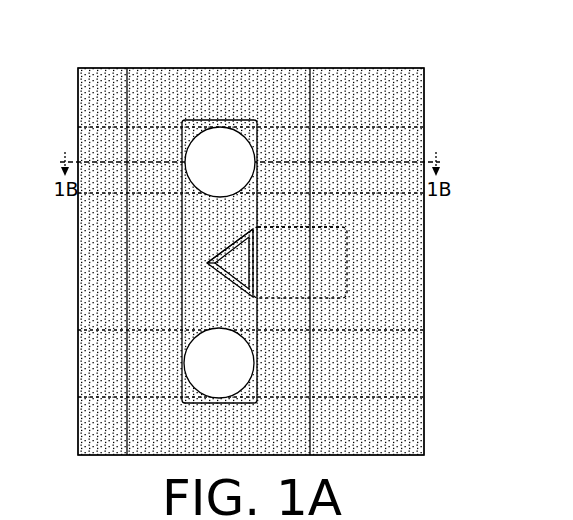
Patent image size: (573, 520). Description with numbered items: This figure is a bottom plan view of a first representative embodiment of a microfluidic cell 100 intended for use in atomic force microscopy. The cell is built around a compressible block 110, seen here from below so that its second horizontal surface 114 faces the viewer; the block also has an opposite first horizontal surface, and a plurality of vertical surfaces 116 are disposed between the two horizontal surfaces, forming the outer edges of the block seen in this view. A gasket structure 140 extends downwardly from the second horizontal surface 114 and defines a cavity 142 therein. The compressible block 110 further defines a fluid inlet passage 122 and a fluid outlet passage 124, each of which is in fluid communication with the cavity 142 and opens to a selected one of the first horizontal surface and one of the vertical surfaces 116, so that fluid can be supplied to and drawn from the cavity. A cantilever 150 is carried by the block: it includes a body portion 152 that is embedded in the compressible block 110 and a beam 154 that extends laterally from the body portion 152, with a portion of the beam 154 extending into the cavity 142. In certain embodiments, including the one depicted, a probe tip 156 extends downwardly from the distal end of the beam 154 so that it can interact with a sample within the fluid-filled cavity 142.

The microfluidic cell 100 is at (378, 46).
The compressible block 110 is at (131, 62).
The second horizontal surface 114 is at (378, 361).
The vertical surfaces 116 is at (78, 108).
The fluid inlet passage 122 is at (204, 186).
The fluid outlet passage 124 is at (204, 372).
The gasket structure 140 is at (195, 75).
The cavity 142 is at (227, 320).
The cantilever 150 is at (210, 274).
The body portion 152 is at (330, 227).
The beam 154 is at (248, 238).
The probe tip 156 is at (203, 262).